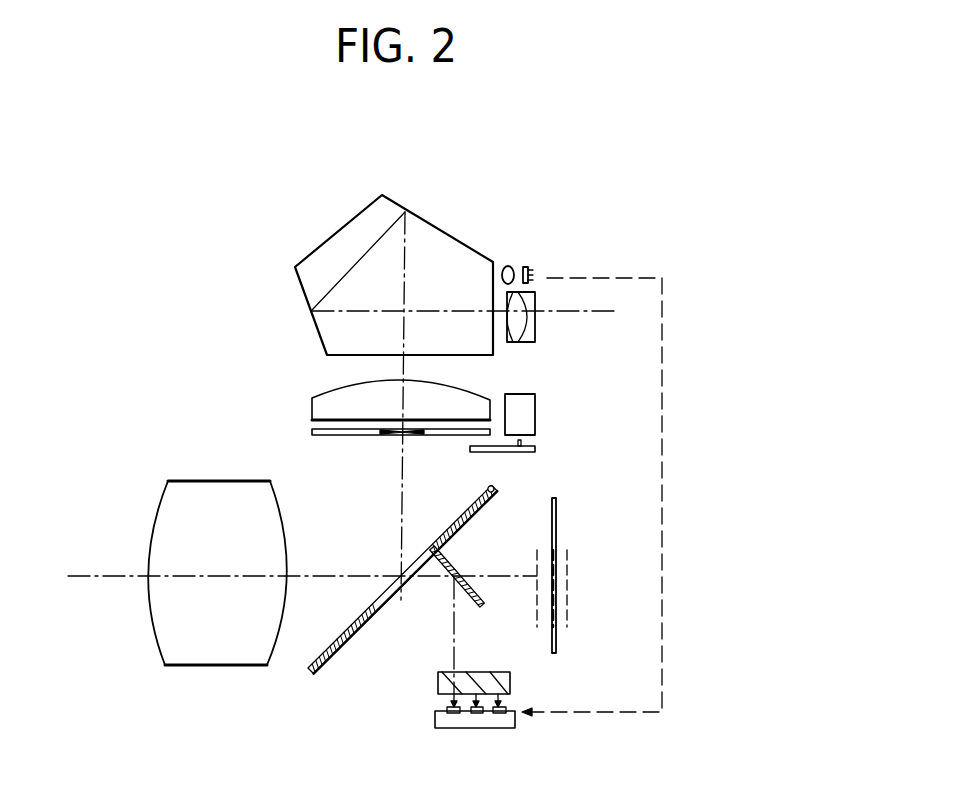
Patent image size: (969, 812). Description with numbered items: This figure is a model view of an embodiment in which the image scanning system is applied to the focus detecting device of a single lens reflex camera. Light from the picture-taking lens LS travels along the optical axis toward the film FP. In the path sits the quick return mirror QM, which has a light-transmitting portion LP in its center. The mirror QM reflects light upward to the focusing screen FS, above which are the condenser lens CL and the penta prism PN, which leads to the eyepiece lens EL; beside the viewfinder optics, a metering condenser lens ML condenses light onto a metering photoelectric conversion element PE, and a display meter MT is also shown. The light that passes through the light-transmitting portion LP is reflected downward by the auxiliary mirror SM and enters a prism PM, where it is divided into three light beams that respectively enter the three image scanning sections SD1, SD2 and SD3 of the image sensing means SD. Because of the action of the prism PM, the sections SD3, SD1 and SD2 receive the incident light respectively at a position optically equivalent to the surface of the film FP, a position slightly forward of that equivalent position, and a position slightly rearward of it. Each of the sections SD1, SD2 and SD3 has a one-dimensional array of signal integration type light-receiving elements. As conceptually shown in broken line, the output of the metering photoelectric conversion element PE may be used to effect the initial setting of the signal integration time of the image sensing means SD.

The penta prism PN is at (342, 230).
The metering condenser lens ML is at (510, 266).
The metering photoelectric conversion element PE is at (530, 267).
The eyepiece lens EL is at (525, 342).
The display meter MT is at (535, 403).
The condenser lens CL is at (312, 408).
The focusing screen FS is at (330, 435).
The picture-taking lens LS is at (235, 667).
The quick return mirror QM is at (325, 660).
The light-transmitting portion LP is at (392, 596).
The auxiliary mirror SM is at (447, 557).
The film FP is at (556, 513).
The prism PM is at (440, 677).
The image sensing means SD is at (440, 729).
The image scanning section SD1 is at (455, 728).
The image scanning section SD2 is at (500, 713).
The image scanning section SD3 is at (482, 728).